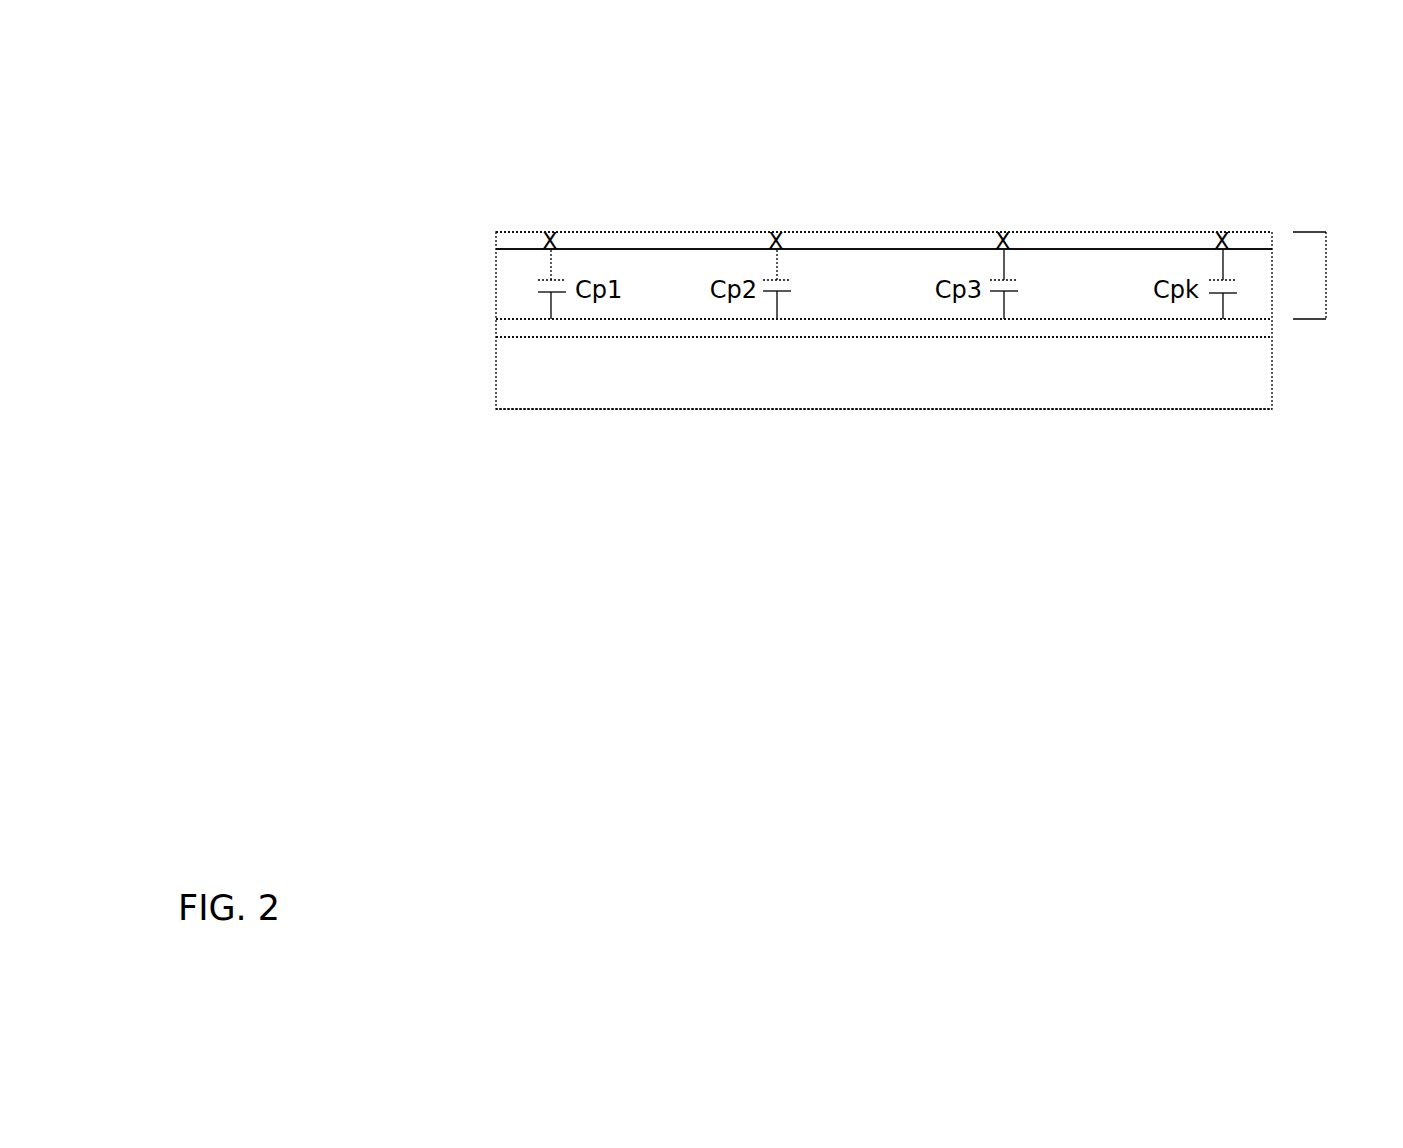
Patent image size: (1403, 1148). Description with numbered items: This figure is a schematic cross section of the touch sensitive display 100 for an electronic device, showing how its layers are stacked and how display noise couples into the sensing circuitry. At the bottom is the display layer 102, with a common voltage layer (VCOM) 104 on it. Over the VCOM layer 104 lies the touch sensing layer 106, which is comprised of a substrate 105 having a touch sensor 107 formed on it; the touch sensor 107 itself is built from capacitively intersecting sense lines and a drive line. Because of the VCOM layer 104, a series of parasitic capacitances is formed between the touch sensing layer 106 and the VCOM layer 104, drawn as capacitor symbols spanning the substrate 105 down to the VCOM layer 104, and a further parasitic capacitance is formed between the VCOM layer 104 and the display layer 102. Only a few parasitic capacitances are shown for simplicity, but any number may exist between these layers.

The touch sensitive display 100 is at (1147, 131).
The display layer 102 is at (495, 370).
The common voltage layer (VCOM) 104 is at (495, 333).
The substrate 105 is at (495, 287).
The touch sensing layer 106 is at (1326, 275).
The touch sensor 107 is at (495, 240).